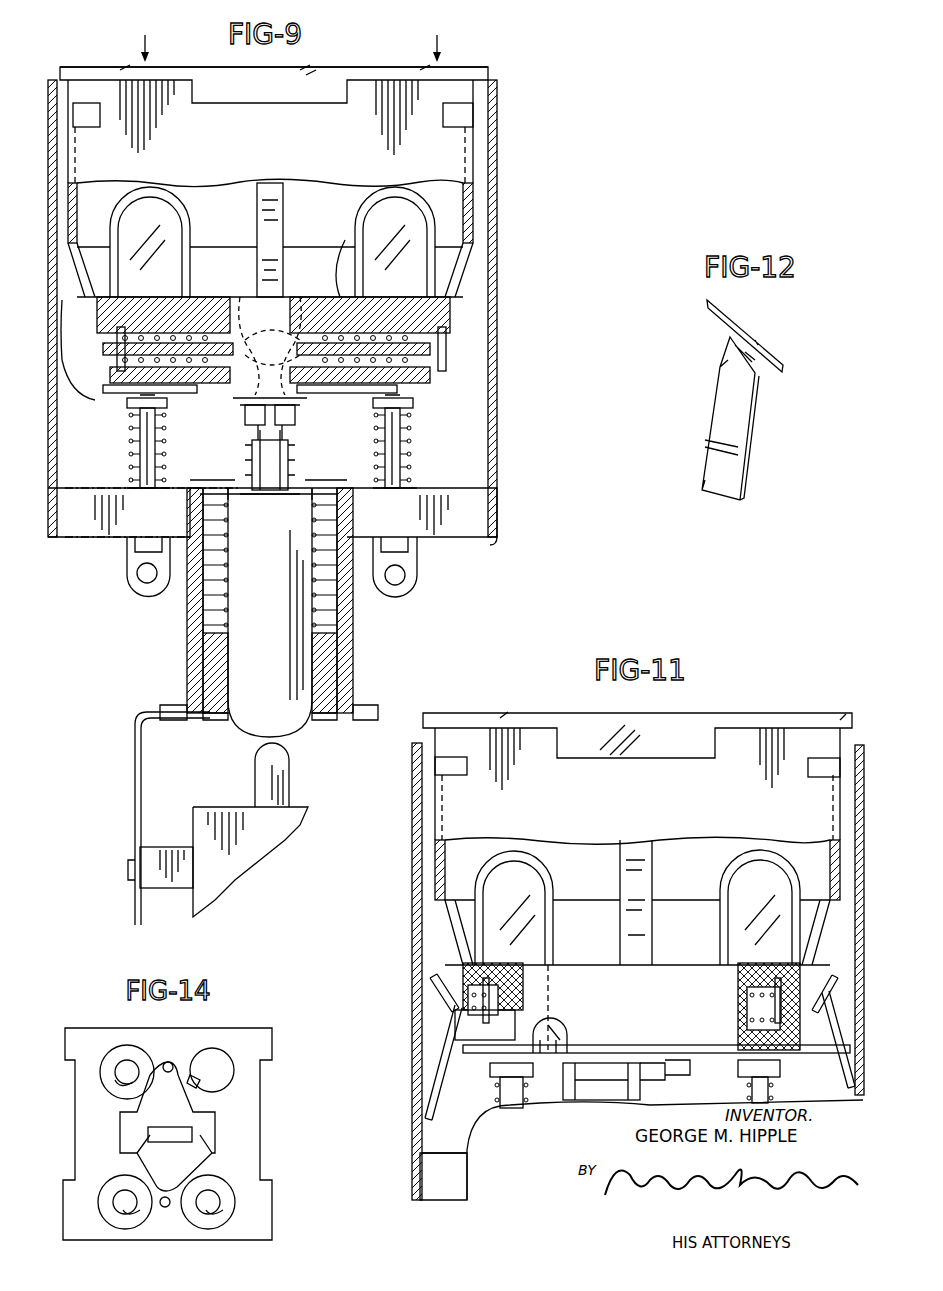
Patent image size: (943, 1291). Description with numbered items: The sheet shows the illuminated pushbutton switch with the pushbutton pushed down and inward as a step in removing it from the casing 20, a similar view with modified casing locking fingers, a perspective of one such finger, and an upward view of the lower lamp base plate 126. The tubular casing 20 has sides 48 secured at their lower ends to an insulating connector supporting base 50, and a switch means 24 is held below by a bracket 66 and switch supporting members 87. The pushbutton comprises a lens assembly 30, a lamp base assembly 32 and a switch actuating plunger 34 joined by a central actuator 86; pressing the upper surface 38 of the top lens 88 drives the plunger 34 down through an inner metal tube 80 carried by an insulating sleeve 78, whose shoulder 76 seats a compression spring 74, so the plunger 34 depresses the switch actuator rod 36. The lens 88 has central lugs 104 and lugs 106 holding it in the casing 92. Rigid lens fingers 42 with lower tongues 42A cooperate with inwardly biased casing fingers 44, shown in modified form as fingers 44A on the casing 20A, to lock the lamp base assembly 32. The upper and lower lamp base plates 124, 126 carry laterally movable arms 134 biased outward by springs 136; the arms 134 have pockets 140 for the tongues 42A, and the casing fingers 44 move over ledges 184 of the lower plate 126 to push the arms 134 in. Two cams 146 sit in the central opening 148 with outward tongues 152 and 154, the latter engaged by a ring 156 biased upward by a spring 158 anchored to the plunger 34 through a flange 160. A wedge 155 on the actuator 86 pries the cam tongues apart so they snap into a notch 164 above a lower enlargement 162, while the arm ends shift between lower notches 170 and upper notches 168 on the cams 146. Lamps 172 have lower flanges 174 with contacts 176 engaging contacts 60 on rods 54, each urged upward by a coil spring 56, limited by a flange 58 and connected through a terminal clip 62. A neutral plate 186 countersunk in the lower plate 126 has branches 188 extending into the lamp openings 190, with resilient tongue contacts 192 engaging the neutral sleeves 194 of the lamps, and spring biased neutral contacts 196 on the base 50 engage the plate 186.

In FIG. 9, the casing 20 is at (512, 502).
In FIG. 11, the lamp socket assembly 20A is at (408, 910).
In FIG. 9, the switch means 24 is at (210, 893).
In FIG. 9, the lens assembly 30 is at (480, 140).
In FIG. 11, the lens assembly 30 is at (433, 800).
In FIG. 11, the lamp base assembly 32 is at (391, 973).
In FIG. 9, the switch actuating plunger 34 is at (255, 686).
In FIG. 9, the switch means actuator rod 36 is at (272, 793).
In FIG. 9, the upper surface of lens 38 is at (116, 67).
In FIG. 9, the lens assembly fingers 42 is at (110, 277).
In FIG. 11, the lens assembly fingers 42 is at (450, 922).
In FIG. 9, the finger tongues 42A is at (103, 388).
In FIG. 11, the finger tongues 42A is at (455, 998).
In FIG. 9, the casing fingers 44 is at (67, 283).
In FIG. 12, the contact 44A is at (718, 413).
In FIG. 11, the contact 44A is at (428, 1080).
In FIG. 9, the casing sides 48 is at (48, 530).
In FIG. 9, the connector supporting base 50 is at (475, 538).
In FIG. 11, the connector supporting base 50 is at (453, 1183).
In FIG. 9, the electrical contact supporting rods 54 is at (143, 455).
In FIG. 9, the coil spring 56 is at (130, 468).
In FIG. 11, the coil spring 56 is at (493, 1100).
In FIG. 9, the upward limit flanges 58 is at (128, 575).
In FIG. 9, the lamp contacts 60 is at (133, 408).
In FIG. 11, the lamp contacts 60 is at (493, 1070).
In FIG. 9, the terminal connector clip 62 is at (146, 592).
In FIG. 9, the bracket 66 is at (132, 807).
In FIG. 9, the compression spring 74 is at (222, 618).
In FIG. 9, the sleeve shoulder 76 is at (223, 640).
In FIG. 9, the insulating sleeve 78 is at (337, 680).
In FIG. 9, the inner metal tube 80 is at (320, 657).
In FIG. 9, the central actuator rod 86 is at (274, 502).
In FIG. 11, the central actuator rod 86 is at (623, 923).
In FIG. 9, the switch supporting members 87 is at (157, 888).
In FIG. 9, the top lens 88 is at (370, 72).
In FIG. 11, the top lens 88 is at (737, 712).
In FIG. 9, the casing 92 is at (480, 204).
In FIG. 9, the downward central lugs 104 is at (308, 78).
In FIG. 9, the lugs 106 is at (92, 108).
In FIG. 11, the upper lamp base plate 124 is at (673, 977).
In FIG. 14, the lower lamp base plate 126 is at (252, 1227).
In FIG. 11, the lower lamp base plate 126 is at (685, 1043).
In FIG. 9, the laterally movable arms 134 is at (193, 295).
In FIG. 11, the laterally movable arms 134 is at (522, 1012).
In FIG. 9, the compression springs 136 is at (443, 313).
In FIG. 9, the pockets 140 is at (455, 372).
In FIG. 11, the pockets 140 is at (477, 1010).
In FIG. 9, the cams 146 is at (300, 410).
In FIG. 9, the central opening 148 is at (235, 297).
In FIG. 14, the central opening 148 is at (193, 1117).
In FIG. 9, the outward tongues 152 is at (243, 497).
In FIG. 9, the outward tongues 154 is at (302, 445).
In FIG. 11, the outward tongues 154 is at (600, 1075).
In FIG. 9, the wedge enlargement 155 is at (330, 252).
In FIG. 9, the ring 156 is at (353, 493).
In FIG. 11, the ring 156 is at (597, 1078).
In FIG. 9, the spring 158 is at (253, 503).
In FIG. 9, the flange 160 is at (363, 500).
In FIG. 9, the lower enlargement 162 is at (295, 400).
In FIG. 9, the notch 164 is at (258, 398).
In FIG. 9, the upper notches 168 is at (270, 275).
In FIG. 9, the lower notches 170 is at (300, 425).
In FIG. 9, the lamps 172 is at (150, 205).
In FIG. 11, the lamps 172 is at (527, 900).
In FIG. 9, the lower flanges 174 is at (128, 400).
In FIG. 14, the lower flanges 174 is at (107, 1060).
In FIG. 9, the lamp electrical contacts 176 is at (420, 402).
In FIG. 14, the lamp electrical contacts 176 is at (120, 1075).
In FIG. 9, the ledges 184 is at (455, 363).
In FIG. 14, the ledges 184 is at (100, 1075).
In FIG. 11, the ledges 184 is at (450, 1037).
In FIG. 12, the neutral connection metal plate 186 is at (782, 358).
In FIG. 14, the neutral connection metal plate 186 is at (197, 1148).
In FIG. 11, the neutral connection metal plate 186 is at (433, 982).
In FIG. 14, the branches 188 is at (158, 1073).
In FIG. 14, the lamp openings 190 is at (217, 1050).
In FIG. 14, the neutral tongue contacts 192 is at (193, 1077).
In FIG. 11, the neutral tongue contacts 192 is at (548, 1053).
In FIG. 11, the neutral cylindrical metal sleeves 194 is at (545, 1036).
In FIG. 11, the neutral contacts 196 is at (562, 1055).